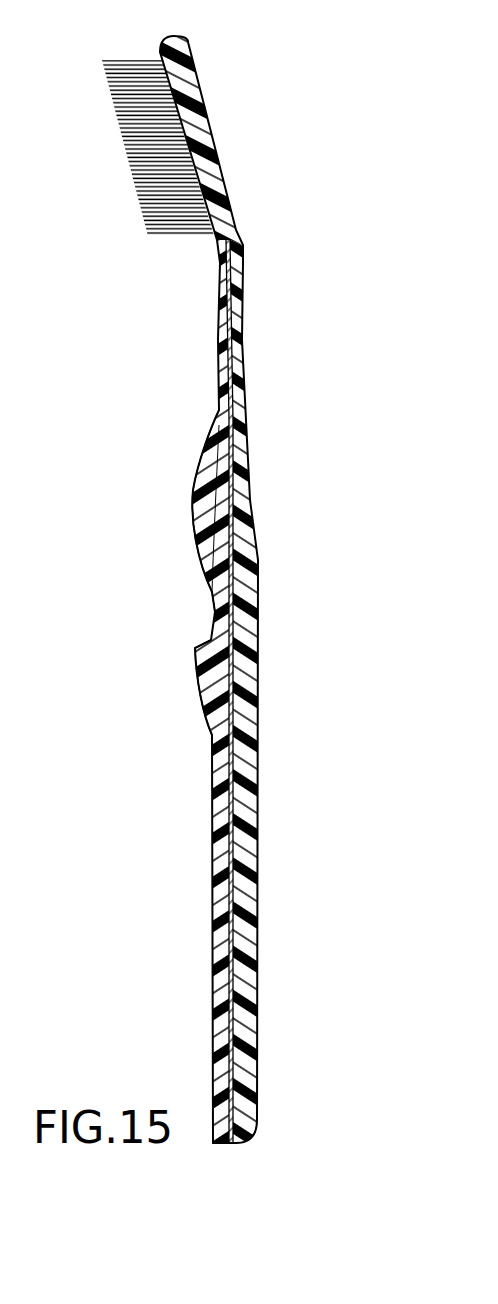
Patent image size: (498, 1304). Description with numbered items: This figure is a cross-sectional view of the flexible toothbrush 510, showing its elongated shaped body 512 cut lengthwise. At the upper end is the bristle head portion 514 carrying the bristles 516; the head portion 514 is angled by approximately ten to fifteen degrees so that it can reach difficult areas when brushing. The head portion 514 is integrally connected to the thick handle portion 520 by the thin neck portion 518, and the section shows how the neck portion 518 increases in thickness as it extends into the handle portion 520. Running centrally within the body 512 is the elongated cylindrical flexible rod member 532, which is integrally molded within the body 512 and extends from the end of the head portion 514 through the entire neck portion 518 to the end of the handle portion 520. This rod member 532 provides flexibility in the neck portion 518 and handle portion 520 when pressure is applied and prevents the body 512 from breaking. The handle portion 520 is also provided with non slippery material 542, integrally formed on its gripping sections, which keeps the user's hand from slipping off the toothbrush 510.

The flexible toothbrush 510 is at (293, 84).
The elongated shaped body 512 is at (246, 417).
The bristle head portion 514 is at (212, 164).
The bristles 516 is at (132, 145).
The thin neck portion 518 is at (218, 345).
The thick handle portion 520 is at (213, 905).
The flexible rod member 532 is at (233, 790).
The non slippery material 542 is at (252, 885).